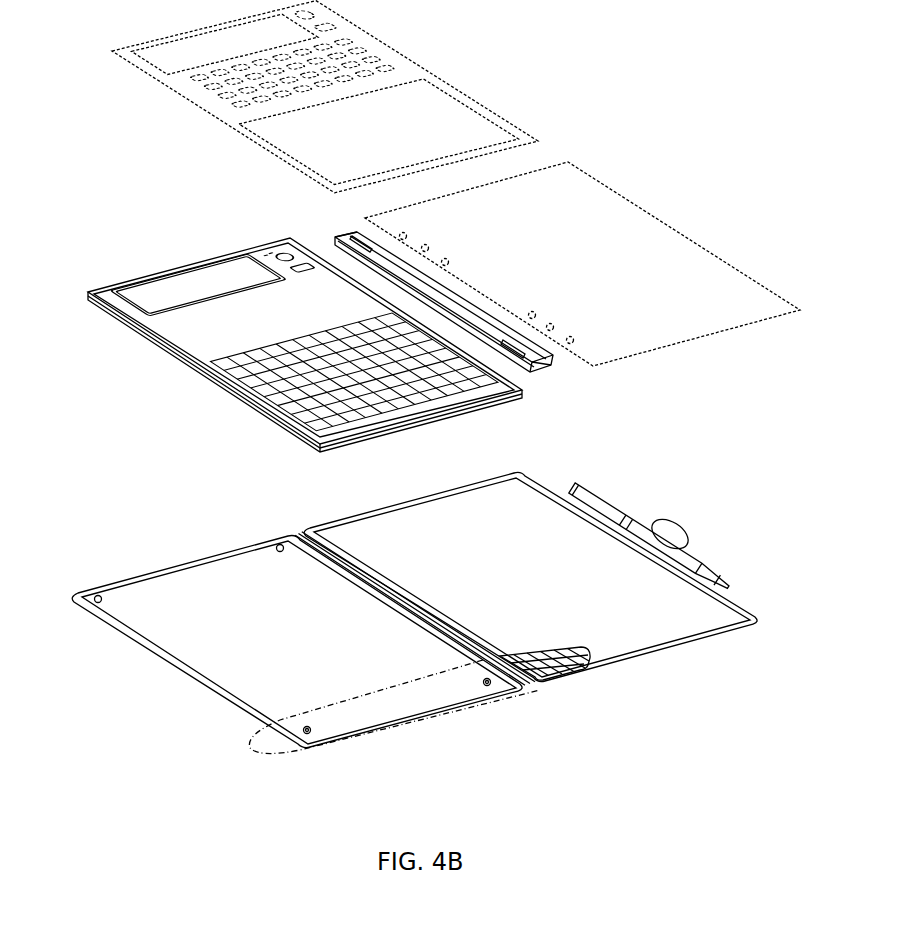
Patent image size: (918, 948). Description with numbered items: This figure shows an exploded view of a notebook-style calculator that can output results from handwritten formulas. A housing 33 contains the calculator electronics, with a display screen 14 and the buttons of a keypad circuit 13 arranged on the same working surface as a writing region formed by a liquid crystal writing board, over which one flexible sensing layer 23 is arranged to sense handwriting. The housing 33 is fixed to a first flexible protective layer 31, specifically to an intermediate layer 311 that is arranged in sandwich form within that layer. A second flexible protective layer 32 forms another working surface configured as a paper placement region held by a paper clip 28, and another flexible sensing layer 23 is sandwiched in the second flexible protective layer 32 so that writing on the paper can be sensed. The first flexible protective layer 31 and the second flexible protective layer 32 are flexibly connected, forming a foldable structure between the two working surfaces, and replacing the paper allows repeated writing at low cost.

The keypad circuit 13 is at (213, 337).
The display screen 14 is at (205, 283).
The flexible sensing layer 23 is at (273, 417).
The paper clip 28 is at (457, 307).
The first flexible protective layer 31 is at (222, 577).
The second flexible protective layer 32 is at (543, 522).
The housing 33 is at (120, 324).
The intermediate layer 311 is at (425, 695).